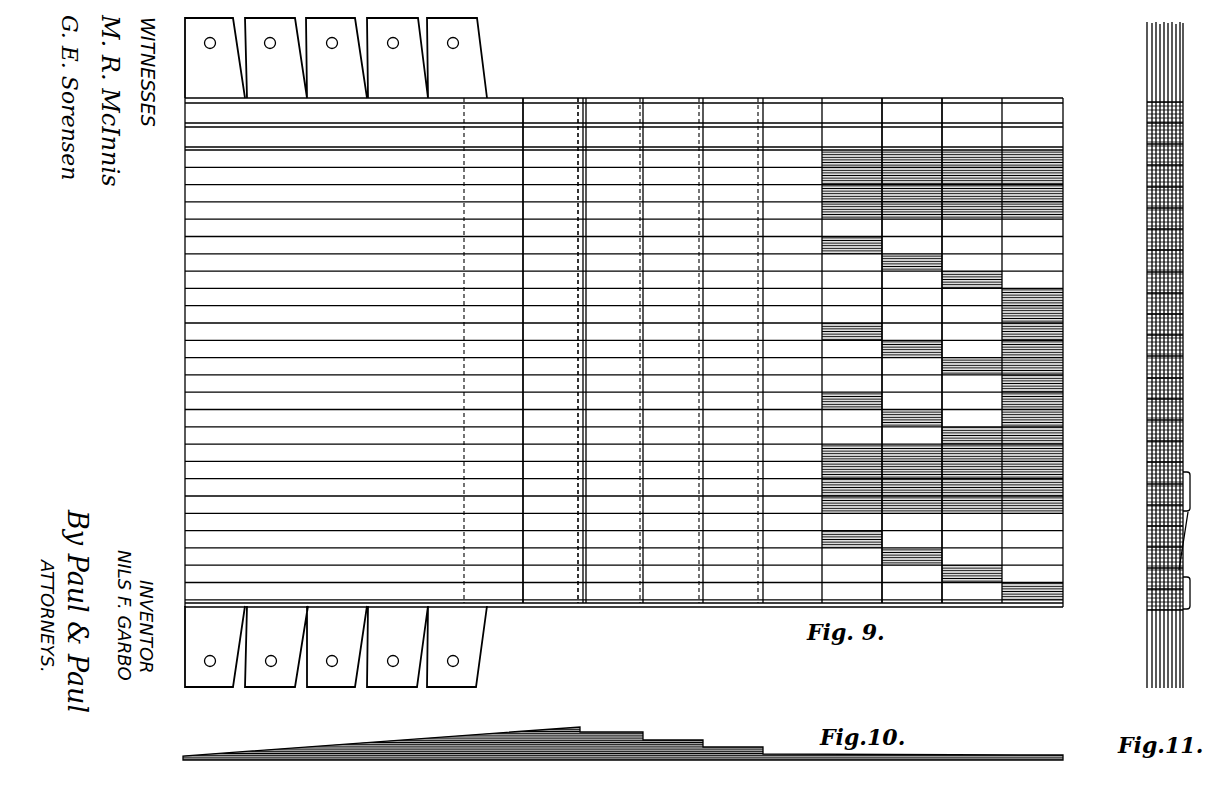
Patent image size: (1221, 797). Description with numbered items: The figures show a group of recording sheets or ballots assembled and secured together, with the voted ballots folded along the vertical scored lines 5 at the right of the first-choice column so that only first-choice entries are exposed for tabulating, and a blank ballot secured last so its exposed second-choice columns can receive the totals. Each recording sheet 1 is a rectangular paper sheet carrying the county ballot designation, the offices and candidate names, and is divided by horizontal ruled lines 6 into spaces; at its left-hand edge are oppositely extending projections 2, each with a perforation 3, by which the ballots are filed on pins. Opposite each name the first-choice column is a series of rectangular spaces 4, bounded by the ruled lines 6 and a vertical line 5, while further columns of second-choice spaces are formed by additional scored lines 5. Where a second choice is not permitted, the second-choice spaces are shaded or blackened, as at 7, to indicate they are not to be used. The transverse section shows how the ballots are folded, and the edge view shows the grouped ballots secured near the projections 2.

In FIG. 9, the recording sheet 1 is at (185, 345).
In FIG. 9, the oppositely extending projections 2 is at (342, 700).
In FIG. 11, the oppositely extending projections 2 is at (1147, 670).
In FIG. 9, the perforation 3 is at (311, 694).
In FIG. 9, the series of rectangular spaces 4 is at (549, 573).
In FIG. 9, the vertical scored lines 5 is at (922, 641).
In FIG. 9, the horizontal ruled lines 6 is at (517, 583).
In FIG. 9, the shaded second-choice spaces 7 is at (1027, 594).